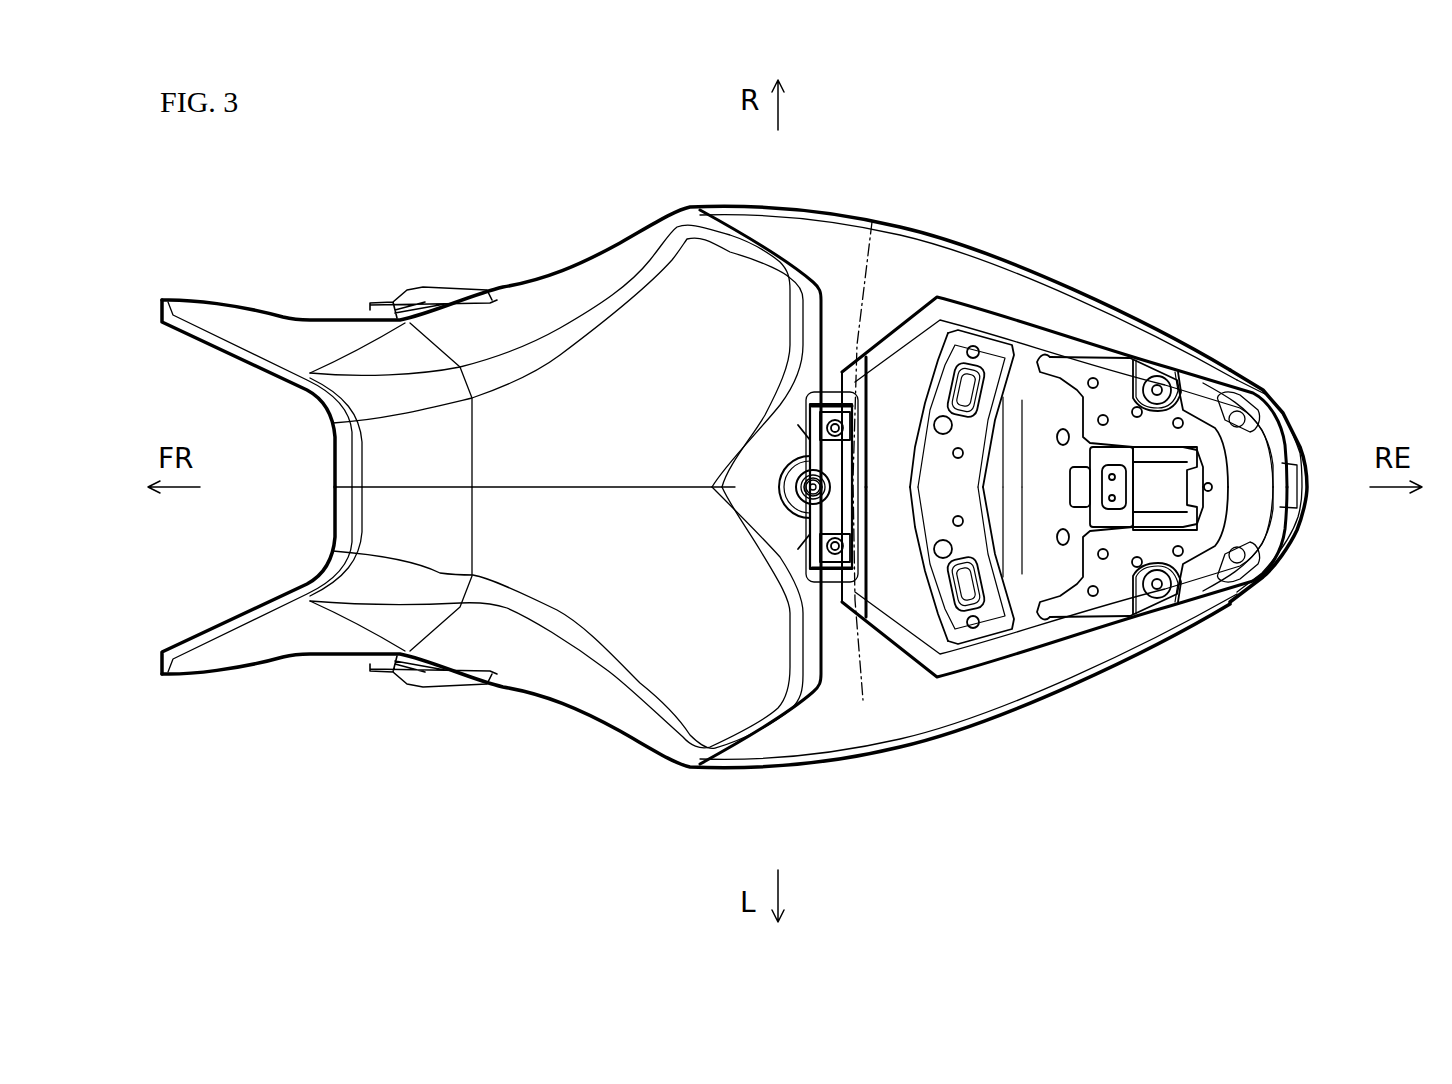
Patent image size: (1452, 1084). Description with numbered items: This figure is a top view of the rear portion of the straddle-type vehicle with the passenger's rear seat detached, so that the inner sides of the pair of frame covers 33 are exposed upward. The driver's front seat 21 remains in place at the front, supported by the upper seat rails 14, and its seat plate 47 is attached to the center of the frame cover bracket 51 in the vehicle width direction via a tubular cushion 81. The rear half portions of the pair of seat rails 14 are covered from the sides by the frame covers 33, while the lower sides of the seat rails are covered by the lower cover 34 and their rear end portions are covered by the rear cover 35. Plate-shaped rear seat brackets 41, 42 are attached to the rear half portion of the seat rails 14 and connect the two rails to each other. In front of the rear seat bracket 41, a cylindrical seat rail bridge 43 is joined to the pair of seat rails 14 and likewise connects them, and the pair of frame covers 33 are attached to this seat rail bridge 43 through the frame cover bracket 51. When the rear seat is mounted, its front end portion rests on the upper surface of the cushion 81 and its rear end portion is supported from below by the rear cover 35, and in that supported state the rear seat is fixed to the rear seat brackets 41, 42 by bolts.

The seat rail 14 is at (1035, 335).
The front seat 21 is at (555, 667).
The frame cover 33 is at (923, 233).
The lower cover 34 is at (1060, 415).
The rear cover 35 is at (1297, 530).
The rear seat bracket 41 is at (925, 640).
The rear seat bracket 42 is at (1182, 545).
The seat rail bridge 43 is at (863, 700).
The seat plate 47 is at (793, 503).
The frame cover bracket 51 is at (830, 570).
The cushion 81 is at (808, 505).